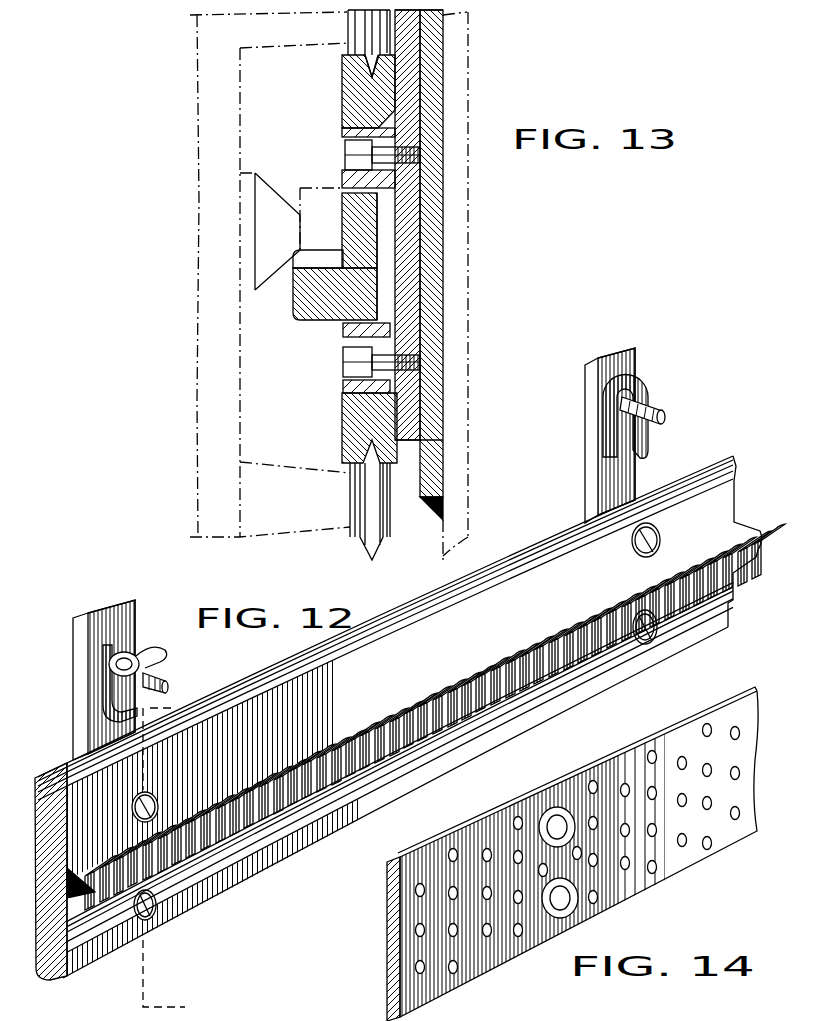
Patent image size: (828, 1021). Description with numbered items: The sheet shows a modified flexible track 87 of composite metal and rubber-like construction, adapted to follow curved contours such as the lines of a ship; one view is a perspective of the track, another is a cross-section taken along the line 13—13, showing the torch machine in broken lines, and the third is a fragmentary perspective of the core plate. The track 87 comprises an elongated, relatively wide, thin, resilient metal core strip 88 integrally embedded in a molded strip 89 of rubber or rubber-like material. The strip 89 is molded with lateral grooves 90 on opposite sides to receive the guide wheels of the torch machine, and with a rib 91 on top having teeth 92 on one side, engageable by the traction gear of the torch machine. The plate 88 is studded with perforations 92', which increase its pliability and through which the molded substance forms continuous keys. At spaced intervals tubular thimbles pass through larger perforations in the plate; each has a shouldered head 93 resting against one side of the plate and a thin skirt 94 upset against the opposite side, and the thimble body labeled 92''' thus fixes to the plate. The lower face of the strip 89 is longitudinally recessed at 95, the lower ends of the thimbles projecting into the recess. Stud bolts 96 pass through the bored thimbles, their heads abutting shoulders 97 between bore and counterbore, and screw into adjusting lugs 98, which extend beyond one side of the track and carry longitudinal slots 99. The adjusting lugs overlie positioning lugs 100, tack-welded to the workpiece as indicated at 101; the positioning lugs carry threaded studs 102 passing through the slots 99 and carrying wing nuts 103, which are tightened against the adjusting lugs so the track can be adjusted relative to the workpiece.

In FIG. 12, the track 87 is at (368, 664).
In FIG. 13, the resilient metal core strip 88 is at (415, 282).
In FIG. 12, the resilient metal core strip 88 is at (43, 892).
In FIG. 14, the resilient metal core strip 88 is at (617, 772).
In FIG. 13, the molded strip 89 is at (413, 390).
In FIG. 12, the molded strip 89 is at (547, 560).
In FIG. 13, the lateral grooves 90 is at (400, 60).
In FIG. 12, the lateral grooves 90 is at (508, 556).
In FIG. 13, the rib 91 is at (293, 293).
In FIG. 12, the rib 91 is at (445, 703).
In FIG. 13, the teeth 92 is at (318, 250).
In FIG. 12, the teeth 92 is at (435, 717).
In FIG. 14, the perforations 92' is at (578, 854).
In FIG. 13, the tooth block 92''' is at (334, 308).
In FIG. 13, the shouldered heads 93 is at (400, 323).
In FIG. 13, the thin skirts 94 is at (342, 107).
In FIG. 13, the recess 95 is at (395, 233).
In FIG. 13, the stud bolts 96 is at (390, 363).
In FIG. 13, the shoulders 97 is at (365, 377).
In FIG. 13, the adjusting lugs 98 is at (345, 170).
In FIG. 12, the slots 99 is at (113, 713).
In FIG. 13, the positioning lugs 100 is at (432, 100).
In FIG. 13, the tack weld 101 is at (443, 510).
In FIG. 12, the threaded studs 102 is at (167, 683).
In FIG. 12, the wing nuts 103 is at (153, 655).
In FIG. 12, the section line 13 is at (176, 858).